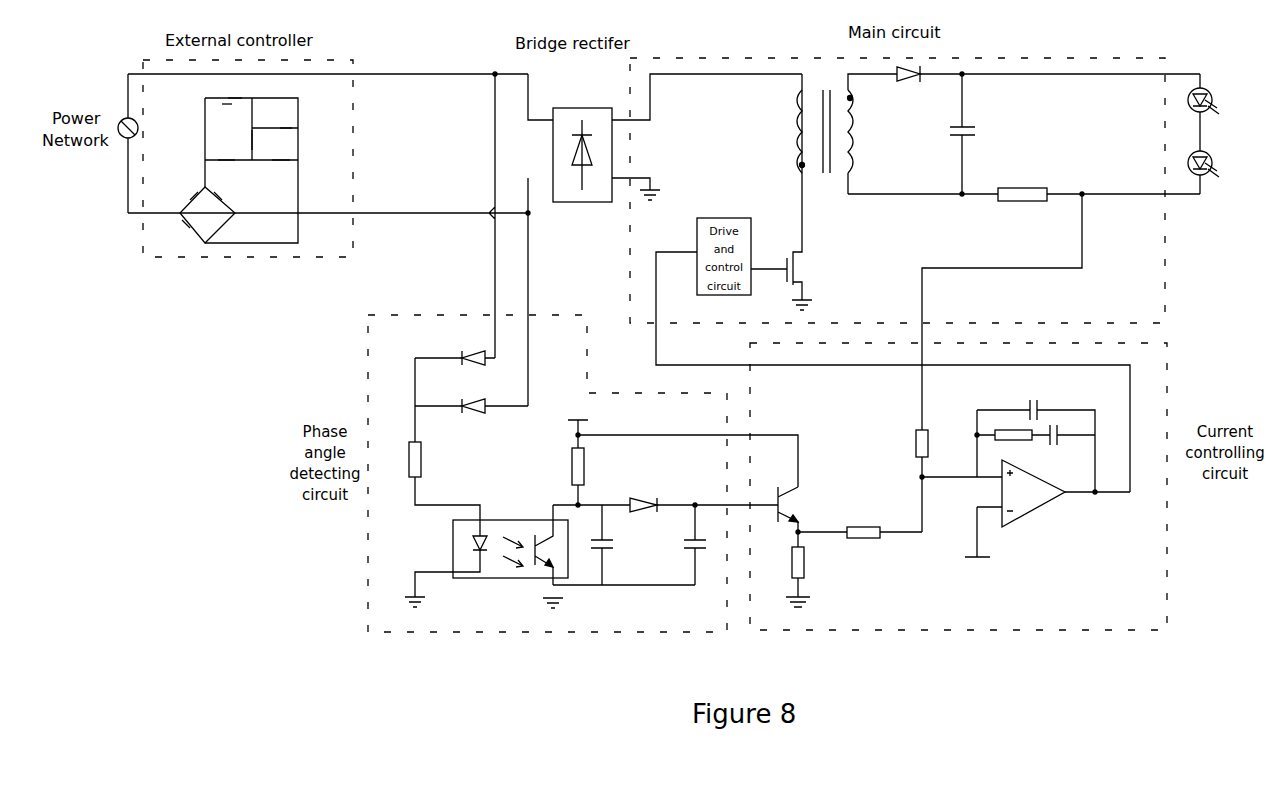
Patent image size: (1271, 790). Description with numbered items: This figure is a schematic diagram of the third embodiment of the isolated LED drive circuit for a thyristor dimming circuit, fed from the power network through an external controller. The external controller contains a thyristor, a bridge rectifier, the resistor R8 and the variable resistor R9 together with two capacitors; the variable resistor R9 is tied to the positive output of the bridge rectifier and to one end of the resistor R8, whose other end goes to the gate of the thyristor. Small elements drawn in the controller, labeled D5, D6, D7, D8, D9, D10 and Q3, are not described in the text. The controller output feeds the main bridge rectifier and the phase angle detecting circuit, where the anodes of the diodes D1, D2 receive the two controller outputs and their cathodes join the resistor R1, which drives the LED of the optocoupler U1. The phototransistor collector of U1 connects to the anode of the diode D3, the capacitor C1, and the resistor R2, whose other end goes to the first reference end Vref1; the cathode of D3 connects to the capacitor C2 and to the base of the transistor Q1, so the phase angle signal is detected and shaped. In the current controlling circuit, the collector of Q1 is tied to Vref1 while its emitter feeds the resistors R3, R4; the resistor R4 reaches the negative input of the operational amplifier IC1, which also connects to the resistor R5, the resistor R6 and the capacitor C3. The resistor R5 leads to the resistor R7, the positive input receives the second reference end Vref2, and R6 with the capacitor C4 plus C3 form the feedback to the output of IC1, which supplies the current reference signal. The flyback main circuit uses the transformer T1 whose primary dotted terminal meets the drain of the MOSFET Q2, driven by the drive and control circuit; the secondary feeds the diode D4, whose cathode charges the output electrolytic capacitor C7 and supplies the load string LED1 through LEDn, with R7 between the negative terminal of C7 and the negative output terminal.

The transformer T1 is at (847, 130).
The diode D4 is at (1048, 82).
The output electrolytic capacitor C7 is at (950, 134).
The resistor R7 is at (1024, 187).
The light emitting diode LED1 is at (1218, 112).
The light emitting diode LEDn is at (1218, 169).
The MOSFET Q2 is at (787, 241).
The diode D1 is at (455, 349).
The diode D2 is at (471, 397).
The resistor R1 is at (444, 439).
The optocoupler U1 is at (486, 556).
The first reference power supply end Vref1 is at (570, 425).
The resistor R2 is at (586, 470).
The diode D3 is at (665, 497).
The capacitor C1 is at (609, 545).
The capacitor C2 is at (629, 544).
The transistor Q1 is at (797, 517).
The resistor R3 is at (803, 577).
The resistor R4 is at (860, 525).
The resistor R5 is at (947, 481).
The integrated operational amplifier IC1 is at (1053, 507).
The capacitor C3 is at (1037, 440).
The resistor R6 is at (1012, 443).
The capacitor C4 is at (1071, 440).
The second reference power supply end Vref2 is at (970, 541).
The variable resistor R9 is at (235, 93).
The diode D9 is at (226, 109).
The diode D5 is at (285, 122).
The resistor R8 is at (258, 140).
The diode D8 is at (226, 153).
The diode D6 is at (281, 153).
The diode D7 is at (190, 197).
The transistor Q3 is at (219, 197).
The diode D10 is at (179, 231).